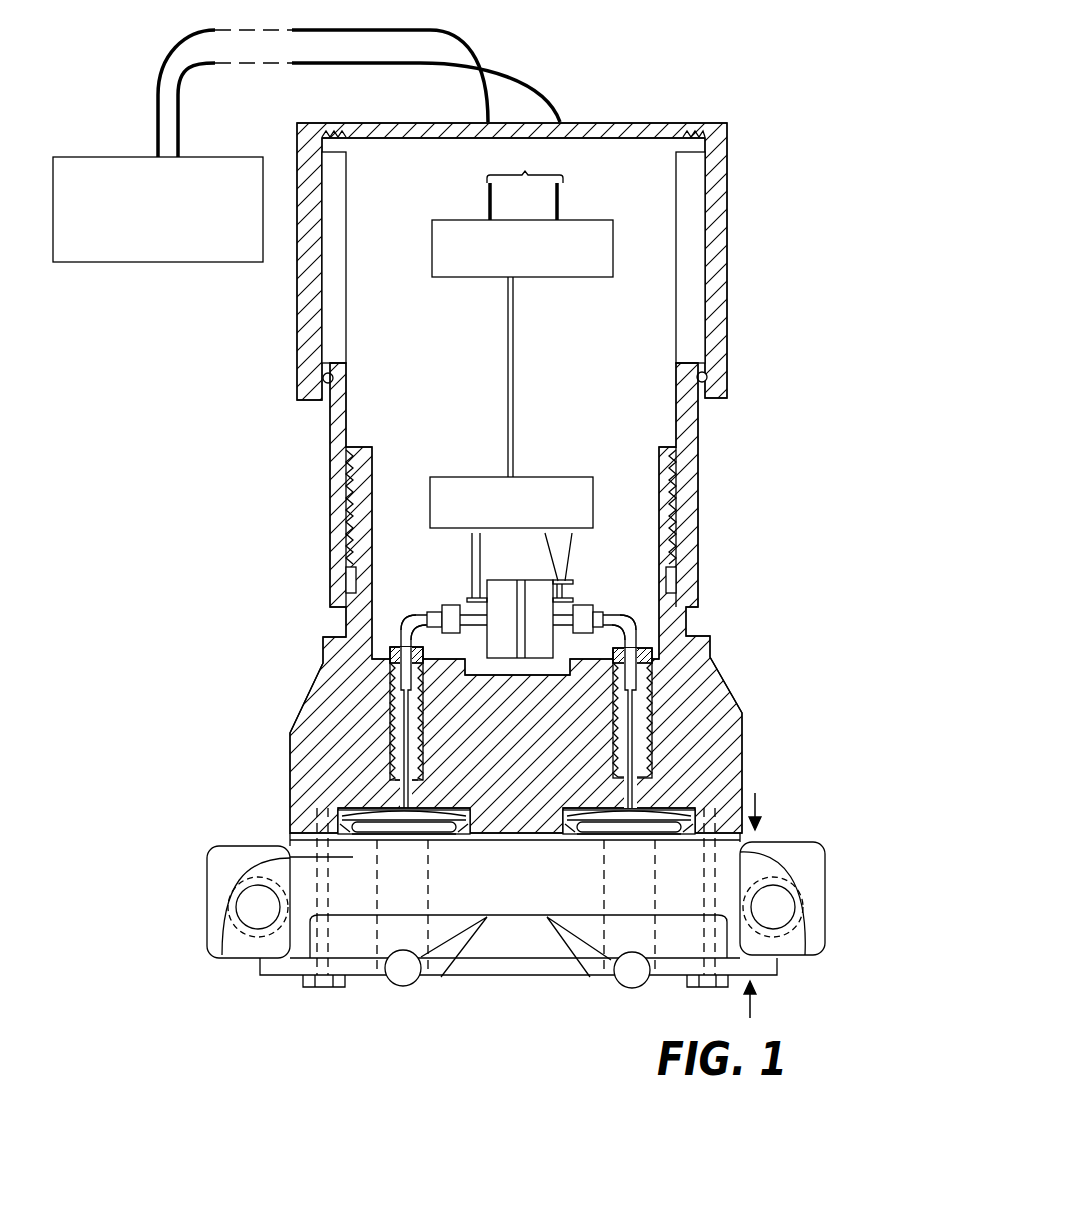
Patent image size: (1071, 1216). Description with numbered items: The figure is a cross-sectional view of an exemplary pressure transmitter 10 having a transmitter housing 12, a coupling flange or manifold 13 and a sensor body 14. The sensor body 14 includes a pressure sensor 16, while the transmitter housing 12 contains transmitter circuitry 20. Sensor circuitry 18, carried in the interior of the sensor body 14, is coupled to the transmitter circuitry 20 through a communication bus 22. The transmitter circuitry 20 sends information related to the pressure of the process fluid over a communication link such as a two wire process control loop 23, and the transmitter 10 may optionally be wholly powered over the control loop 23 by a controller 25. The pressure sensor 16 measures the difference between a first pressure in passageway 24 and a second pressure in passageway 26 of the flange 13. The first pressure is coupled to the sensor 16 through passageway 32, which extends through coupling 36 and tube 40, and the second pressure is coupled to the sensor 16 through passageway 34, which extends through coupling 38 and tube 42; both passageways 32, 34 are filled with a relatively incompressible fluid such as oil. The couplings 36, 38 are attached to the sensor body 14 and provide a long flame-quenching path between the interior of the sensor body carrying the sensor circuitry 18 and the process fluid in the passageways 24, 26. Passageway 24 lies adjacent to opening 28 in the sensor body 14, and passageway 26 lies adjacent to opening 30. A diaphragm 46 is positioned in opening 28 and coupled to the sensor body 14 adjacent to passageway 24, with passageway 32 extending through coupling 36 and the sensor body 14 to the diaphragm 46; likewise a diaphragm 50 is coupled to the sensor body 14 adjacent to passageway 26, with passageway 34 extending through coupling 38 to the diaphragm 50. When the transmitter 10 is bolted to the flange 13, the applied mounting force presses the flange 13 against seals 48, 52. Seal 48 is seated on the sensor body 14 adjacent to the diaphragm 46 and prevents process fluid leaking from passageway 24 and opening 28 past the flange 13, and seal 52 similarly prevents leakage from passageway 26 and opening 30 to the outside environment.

The pressure transmitter 10 is at (745, 276).
The transmitter housing 12 is at (727, 213).
The coupling flange 13 is at (210, 850).
The sensor body 14 is at (712, 660).
The pressure sensor 16 is at (500, 590).
The sensor circuitry 18 is at (593, 500).
The transmitter circuitry 20 is at (613, 236).
The communication bus 22 is at (513, 355).
The two wire process control loop 23 is at (450, 66).
The passageway 24 is at (436, 951).
The controller 25 is at (118, 156).
The passageway 26 is at (598, 952).
The opening 28 is at (357, 827).
The opening 30 is at (700, 810).
The passageway 32 is at (403, 698).
The passageway 34 is at (640, 697).
The coupling 36 is at (390, 672).
The coupling 38 is at (650, 732).
The tube 40 is at (406, 621).
The tube 42 is at (612, 620).
The diaphragm 46 is at (362, 817).
The seal 48 is at (397, 828).
The diaphragm 50 is at (672, 810).
The seal 52 is at (627, 830).